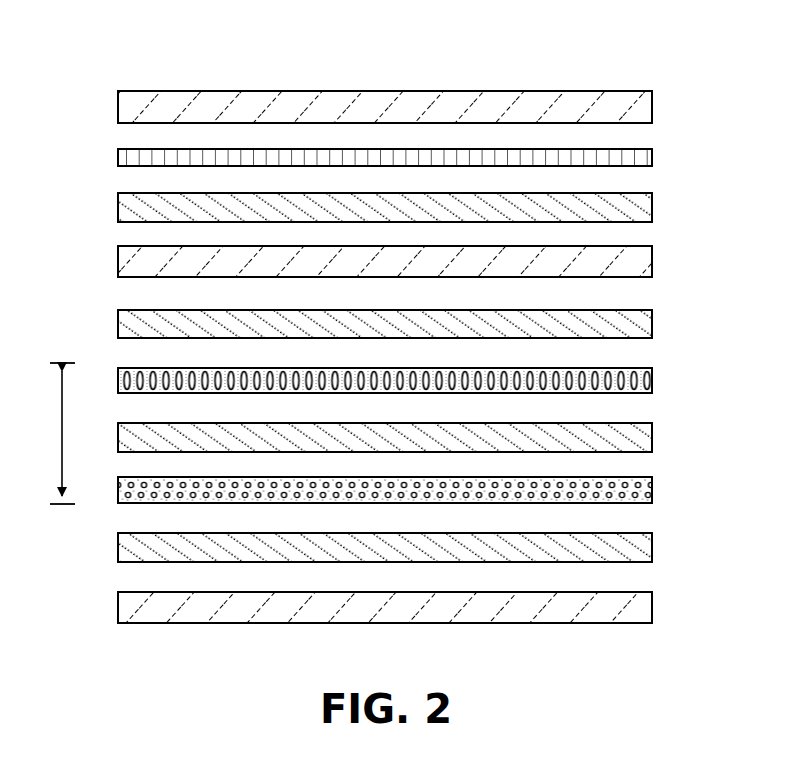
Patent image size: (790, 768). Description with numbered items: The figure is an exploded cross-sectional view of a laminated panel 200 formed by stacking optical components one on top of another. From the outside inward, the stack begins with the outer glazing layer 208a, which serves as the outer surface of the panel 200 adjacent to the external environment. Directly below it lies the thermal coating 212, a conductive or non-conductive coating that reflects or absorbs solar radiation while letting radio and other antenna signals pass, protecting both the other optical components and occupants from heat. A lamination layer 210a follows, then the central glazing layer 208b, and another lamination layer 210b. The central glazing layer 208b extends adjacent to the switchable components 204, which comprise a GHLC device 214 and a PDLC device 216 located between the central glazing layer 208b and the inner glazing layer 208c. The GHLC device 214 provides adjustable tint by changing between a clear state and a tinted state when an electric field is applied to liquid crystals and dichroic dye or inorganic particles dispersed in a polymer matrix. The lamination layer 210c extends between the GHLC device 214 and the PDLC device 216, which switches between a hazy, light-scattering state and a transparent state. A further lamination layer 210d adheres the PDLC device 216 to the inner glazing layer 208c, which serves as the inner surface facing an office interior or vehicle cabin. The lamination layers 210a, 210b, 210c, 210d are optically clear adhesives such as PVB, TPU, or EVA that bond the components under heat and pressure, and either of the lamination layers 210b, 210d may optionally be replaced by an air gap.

The panel 200 is at (103, 78).
The switchable components 204 is at (58, 363).
The outer glazing layer 208a is at (652, 100).
The central glazing layer 208b is at (652, 263).
The inner glazing layer 208c is at (652, 611).
The lamination layer 210a is at (652, 210).
The lamination layer 210b is at (652, 326).
The lamination layer 210c is at (652, 434).
The lamination layer 210d is at (652, 549).
The thermal coating 212 is at (652, 156).
The GHLC device 214 is at (652, 381).
The PDLC device 216 is at (652, 491).